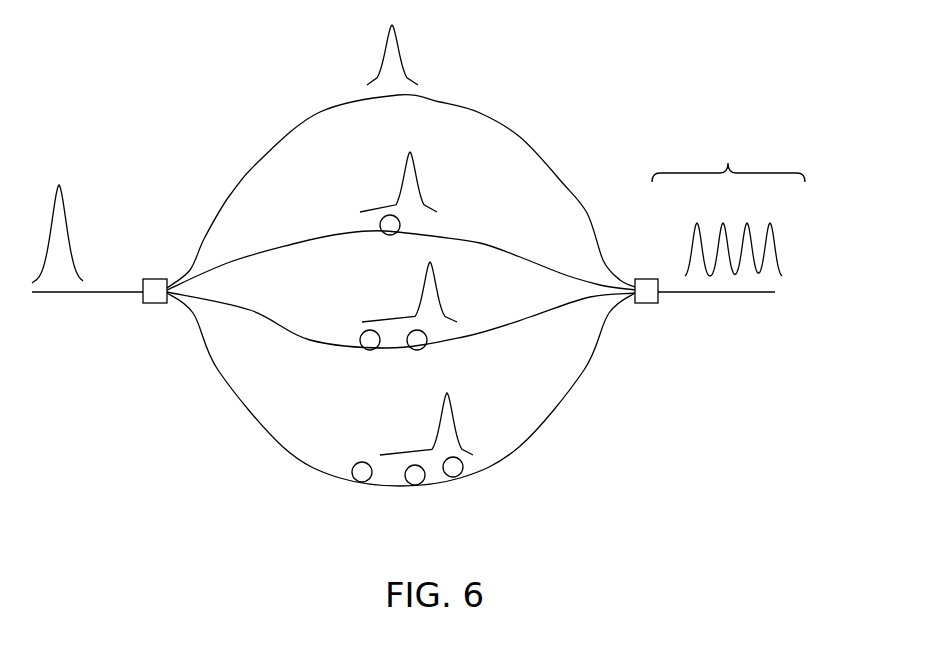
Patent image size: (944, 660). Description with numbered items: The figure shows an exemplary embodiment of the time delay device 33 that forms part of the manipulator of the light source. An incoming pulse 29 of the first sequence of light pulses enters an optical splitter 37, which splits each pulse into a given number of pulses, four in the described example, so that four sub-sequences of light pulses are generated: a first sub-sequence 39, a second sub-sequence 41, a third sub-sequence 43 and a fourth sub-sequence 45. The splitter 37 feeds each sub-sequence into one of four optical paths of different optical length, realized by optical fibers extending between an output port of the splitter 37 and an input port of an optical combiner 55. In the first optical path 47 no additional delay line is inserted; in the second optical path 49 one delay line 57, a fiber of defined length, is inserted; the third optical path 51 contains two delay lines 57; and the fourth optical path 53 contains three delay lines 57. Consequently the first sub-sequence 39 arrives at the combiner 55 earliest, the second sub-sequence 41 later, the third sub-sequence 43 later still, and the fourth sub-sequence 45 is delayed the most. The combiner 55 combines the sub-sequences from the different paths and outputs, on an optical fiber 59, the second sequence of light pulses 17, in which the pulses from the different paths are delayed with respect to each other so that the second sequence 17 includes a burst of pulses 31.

The second sequence of light pulses 17 is at (805, 242).
The pulse 29 is at (61, 182).
The burst of pulses 31 is at (728, 159).
The time delay device 33 is at (202, 75).
The optical splitter 37 is at (155, 307).
The first sub-sequence of light pulses 39 is at (397, 43).
The second sub-sequence of light pulses 41 is at (417, 175).
The third sub-sequence of light pulses 43 is at (437, 290).
The fourth sub-sequence of light pulses 45 is at (457, 422).
The first optical path 47 is at (257, 163).
The second optical path 49 is at (303, 245).
The third optical path 51 is at (313, 338).
The fourth optical path 53 is at (285, 448).
The optical combiner 55 is at (645, 307).
The delay line 57 is at (404, 228).
The optical fiber 59 is at (712, 293).